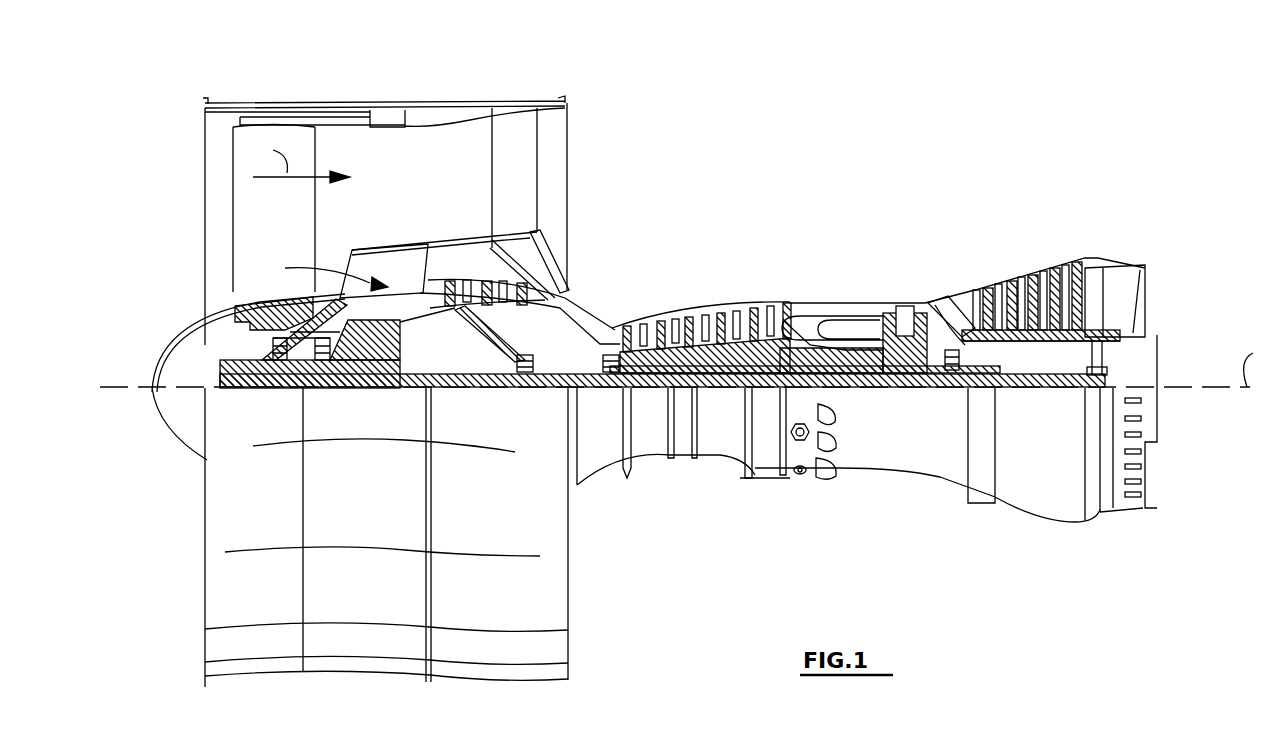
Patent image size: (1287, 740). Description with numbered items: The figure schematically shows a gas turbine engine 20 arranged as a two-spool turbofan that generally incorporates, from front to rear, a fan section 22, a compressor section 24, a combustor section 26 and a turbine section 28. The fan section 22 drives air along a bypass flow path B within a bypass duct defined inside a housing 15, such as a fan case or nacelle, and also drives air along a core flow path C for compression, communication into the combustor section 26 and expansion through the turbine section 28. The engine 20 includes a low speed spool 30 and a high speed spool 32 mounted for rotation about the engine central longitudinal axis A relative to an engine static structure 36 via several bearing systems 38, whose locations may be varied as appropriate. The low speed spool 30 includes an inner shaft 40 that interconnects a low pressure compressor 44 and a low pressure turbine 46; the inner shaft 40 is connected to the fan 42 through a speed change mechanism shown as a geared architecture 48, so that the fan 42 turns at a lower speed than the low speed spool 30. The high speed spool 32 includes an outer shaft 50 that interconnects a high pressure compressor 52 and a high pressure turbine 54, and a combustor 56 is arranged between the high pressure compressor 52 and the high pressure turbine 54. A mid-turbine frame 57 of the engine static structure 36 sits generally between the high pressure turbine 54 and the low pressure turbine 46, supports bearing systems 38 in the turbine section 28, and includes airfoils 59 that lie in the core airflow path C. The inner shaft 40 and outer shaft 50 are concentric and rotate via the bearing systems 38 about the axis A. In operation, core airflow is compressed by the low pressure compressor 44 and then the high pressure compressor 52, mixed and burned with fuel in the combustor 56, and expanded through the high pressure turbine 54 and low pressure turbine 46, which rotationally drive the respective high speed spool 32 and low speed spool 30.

The housing 15 is at (384, 108).
The gas turbine engine 20 is at (855, 142).
The fan section 22 is at (317, 85).
The compressor section 24 is at (701, 309).
The combustor section 26 is at (860, 302).
The turbine section 28 is at (1041, 355).
The low speed spool 30 is at (723, 400).
The high speed spool 32 is at (777, 318).
The engine static structure 36 is at (765, 490).
The bearing systems 38 is at (520, 388).
The inner shaft 40 is at (590, 392).
The fan 42 is at (292, 232).
The low pressure compressor 44 is at (500, 285).
The low pressure turbine 46 is at (1033, 282).
The geared architecture 48 is at (386, 388).
The outer shaft 50 is at (846, 383).
The high pressure compressor 52 is at (702, 320).
The high pressure turbine 54 is at (904, 300).
The combustor 56 is at (842, 330).
The mid-turbine frame 57 is at (950, 290).
The airfoils 59 is at (982, 360).